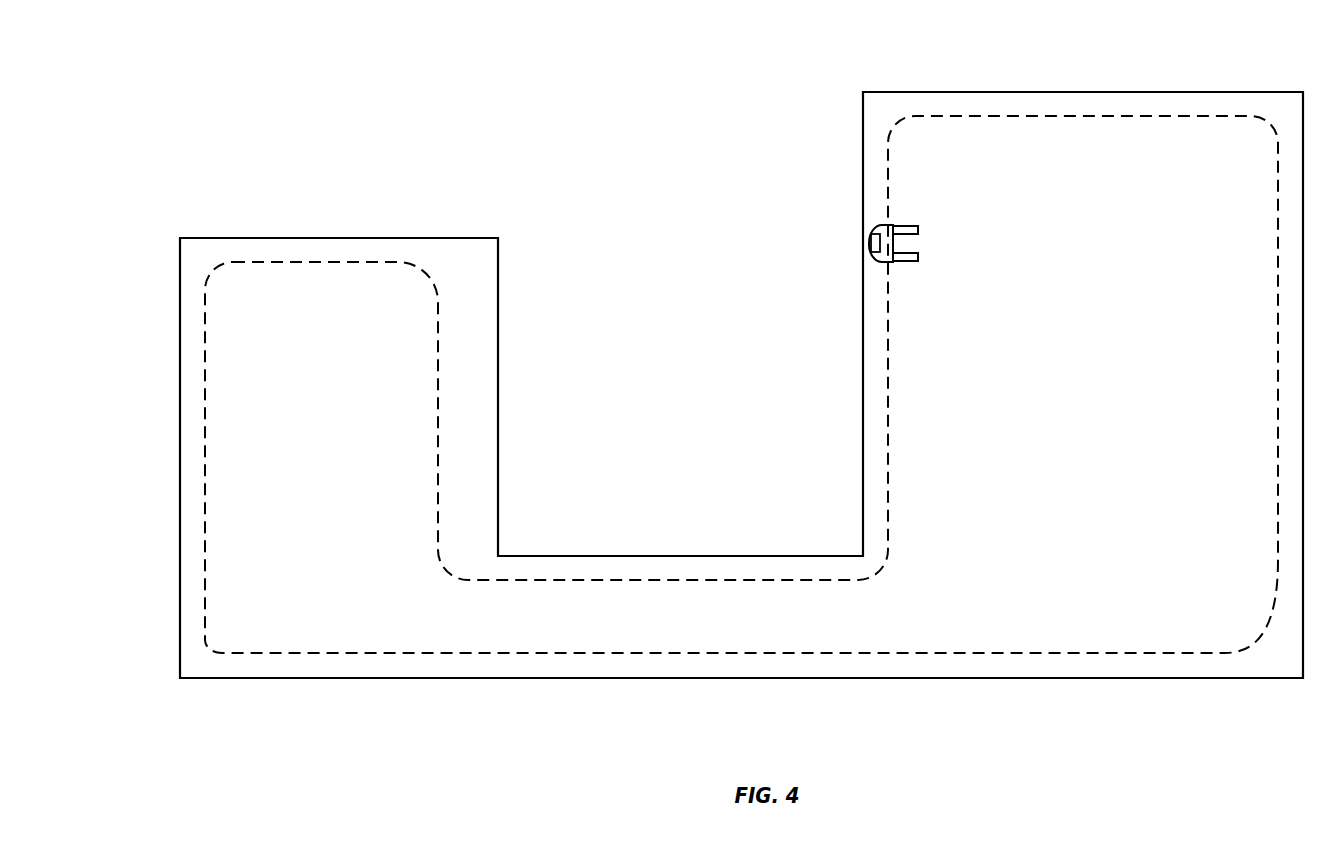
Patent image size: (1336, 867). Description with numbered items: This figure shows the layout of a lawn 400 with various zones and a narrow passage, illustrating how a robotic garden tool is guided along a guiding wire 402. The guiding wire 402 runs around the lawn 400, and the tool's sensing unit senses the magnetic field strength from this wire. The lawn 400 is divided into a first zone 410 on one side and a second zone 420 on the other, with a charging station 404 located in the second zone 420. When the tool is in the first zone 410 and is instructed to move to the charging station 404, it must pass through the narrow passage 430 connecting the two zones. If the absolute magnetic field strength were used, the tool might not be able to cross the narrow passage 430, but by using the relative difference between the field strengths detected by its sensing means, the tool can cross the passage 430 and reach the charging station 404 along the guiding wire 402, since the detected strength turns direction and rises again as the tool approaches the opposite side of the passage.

The lawn 400 is at (307, 96).
The guiding wire 402 is at (233, 262).
The charging station 404 is at (913, 225).
The zone 1 410 is at (360, 595).
The zone 2 420 is at (1132, 578).
The narrow passage 430 is at (677, 613).